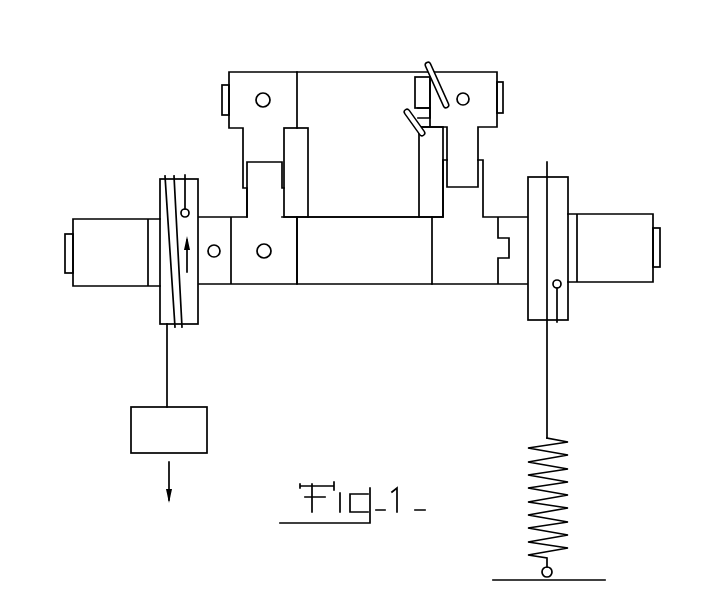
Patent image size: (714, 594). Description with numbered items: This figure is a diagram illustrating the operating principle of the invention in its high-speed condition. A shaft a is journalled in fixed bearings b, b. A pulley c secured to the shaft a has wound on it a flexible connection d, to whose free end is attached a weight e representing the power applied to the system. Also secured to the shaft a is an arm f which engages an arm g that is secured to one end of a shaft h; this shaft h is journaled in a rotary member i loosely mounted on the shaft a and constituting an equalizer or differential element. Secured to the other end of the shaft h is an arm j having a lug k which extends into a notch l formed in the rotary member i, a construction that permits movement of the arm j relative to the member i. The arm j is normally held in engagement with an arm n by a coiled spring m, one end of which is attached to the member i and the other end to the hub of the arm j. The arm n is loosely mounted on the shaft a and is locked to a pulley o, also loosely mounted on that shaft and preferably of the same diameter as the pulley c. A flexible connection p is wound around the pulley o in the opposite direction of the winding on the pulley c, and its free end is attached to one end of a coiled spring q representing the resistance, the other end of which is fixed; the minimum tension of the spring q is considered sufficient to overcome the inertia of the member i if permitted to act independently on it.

The shaft a is at (66, 252).
The fixed bearings b is at (104, 230).
The pulley c is at (170, 197).
The flexible connection d is at (167, 366).
The weight e is at (169, 455).
The arm f is at (249, 270).
The arm g is at (243, 78).
The shaft h is at (221, 92).
The rotary member i is at (331, 90).
The arm j is at (485, 82).
The lug k is at (427, 108).
The notch l is at (423, 90).
The coiled spring m is at (445, 82).
The arm n is at (467, 270).
The pulley o is at (557, 185).
The flexible connection p is at (547, 383).
The coiled spring q is at (560, 511).